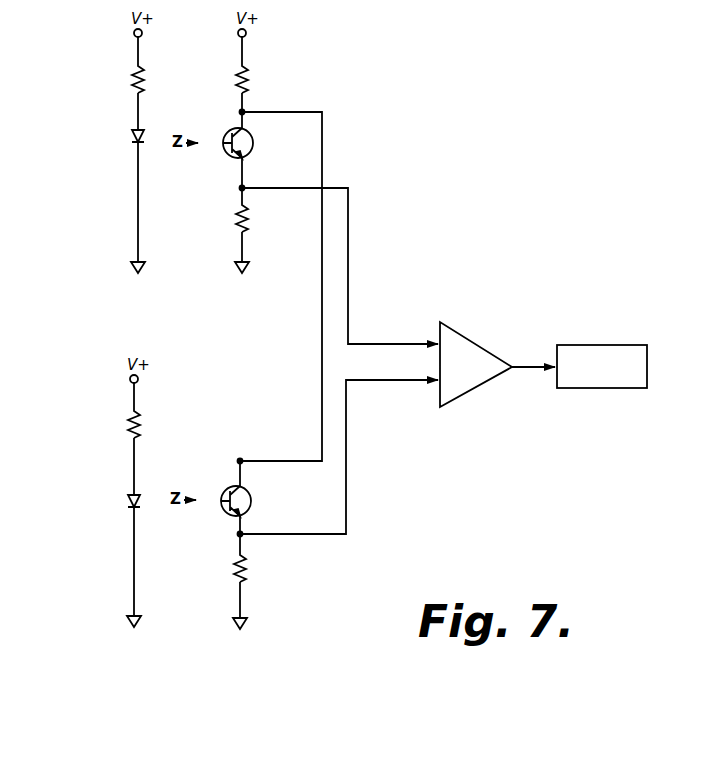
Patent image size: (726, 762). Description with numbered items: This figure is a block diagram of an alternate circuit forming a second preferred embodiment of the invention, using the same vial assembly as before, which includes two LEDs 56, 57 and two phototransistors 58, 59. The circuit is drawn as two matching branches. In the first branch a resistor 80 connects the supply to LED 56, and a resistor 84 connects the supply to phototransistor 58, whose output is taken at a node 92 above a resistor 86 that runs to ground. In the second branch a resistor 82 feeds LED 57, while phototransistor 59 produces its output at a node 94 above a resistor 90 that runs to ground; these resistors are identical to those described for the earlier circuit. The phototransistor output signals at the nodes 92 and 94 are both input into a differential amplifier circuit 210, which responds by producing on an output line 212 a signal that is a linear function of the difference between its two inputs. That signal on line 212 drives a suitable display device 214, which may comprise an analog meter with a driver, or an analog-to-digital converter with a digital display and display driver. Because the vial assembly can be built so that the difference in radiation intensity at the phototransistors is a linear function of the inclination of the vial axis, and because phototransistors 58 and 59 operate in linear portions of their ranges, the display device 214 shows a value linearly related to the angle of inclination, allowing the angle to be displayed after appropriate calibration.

The resistor 80 is at (134, 76).
The LED 56 is at (130, 137).
The resistor 84 is at (248, 76).
The phototransistor 58 is at (253, 143).
The node 92 is at (246, 186).
The resistor 86 is at (251, 217).
The resistor 82 is at (130, 423).
The LED 57 is at (130, 502).
The phototransistor 59 is at (251, 499).
The node 94 is at (244, 540).
The resistor 90 is at (246, 573).
The differential amplifier circuit 210 is at (462, 333).
The line 212 is at (517, 364).
The display device 214 is at (611, 346).